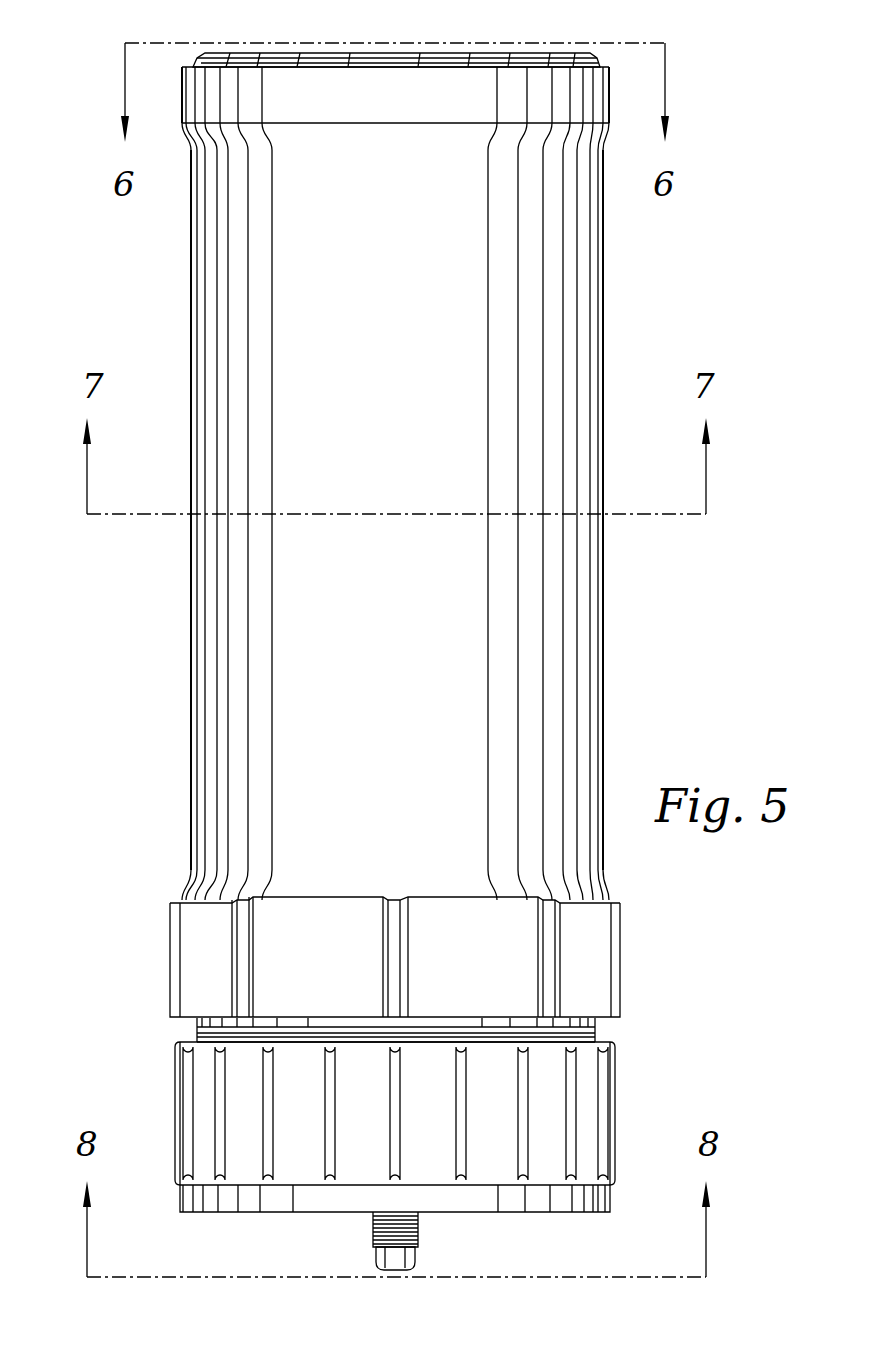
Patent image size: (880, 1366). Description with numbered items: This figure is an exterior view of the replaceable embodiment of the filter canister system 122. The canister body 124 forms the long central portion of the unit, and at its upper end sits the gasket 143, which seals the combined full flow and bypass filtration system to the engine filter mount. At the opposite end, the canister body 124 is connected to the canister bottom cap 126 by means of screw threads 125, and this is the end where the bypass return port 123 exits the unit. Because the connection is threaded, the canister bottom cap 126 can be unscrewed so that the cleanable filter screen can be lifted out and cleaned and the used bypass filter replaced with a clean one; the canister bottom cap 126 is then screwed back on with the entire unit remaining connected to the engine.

The filter canister system 122 is at (140, 712).
The bypass return port 123 is at (420, 1228).
The canister body 124 is at (462, 665).
The screw threads 125 is at (595, 1035).
The canister bottom cap 126 is at (588, 1112).
The gasket 143 is at (490, 52).